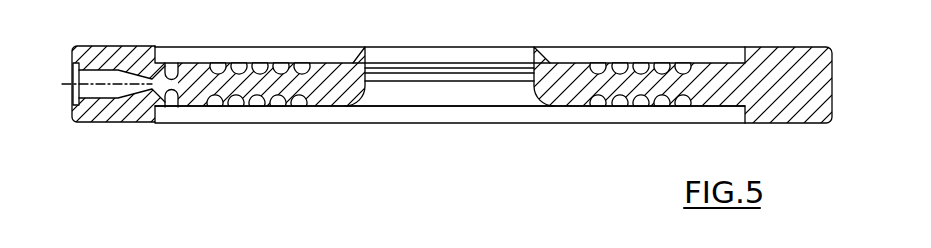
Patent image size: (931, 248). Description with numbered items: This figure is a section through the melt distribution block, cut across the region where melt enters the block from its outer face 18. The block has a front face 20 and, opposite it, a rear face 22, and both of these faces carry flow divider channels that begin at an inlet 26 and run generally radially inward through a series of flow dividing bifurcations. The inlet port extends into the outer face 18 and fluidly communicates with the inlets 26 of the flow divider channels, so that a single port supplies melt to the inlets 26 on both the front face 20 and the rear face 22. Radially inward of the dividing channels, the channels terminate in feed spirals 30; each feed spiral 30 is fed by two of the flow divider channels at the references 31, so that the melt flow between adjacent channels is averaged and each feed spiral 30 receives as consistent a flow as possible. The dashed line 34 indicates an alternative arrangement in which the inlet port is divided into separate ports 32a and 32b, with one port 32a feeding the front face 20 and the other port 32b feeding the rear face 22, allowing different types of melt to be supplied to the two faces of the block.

The outer face 18 is at (833, 85).
The front face 20 is at (567, 65).
The rear face 22 is at (577, 107).
The inlet 26 is at (173, 67).
The feed spiral 30 is at (302, 67).
The reference (junction where two flow divider channels feed a feed spiral) 31 is at (225, 68).
The separate port 32a is at (110, 75).
The separate port 32b is at (104, 88).
The dashed line 34 is at (68, 86).